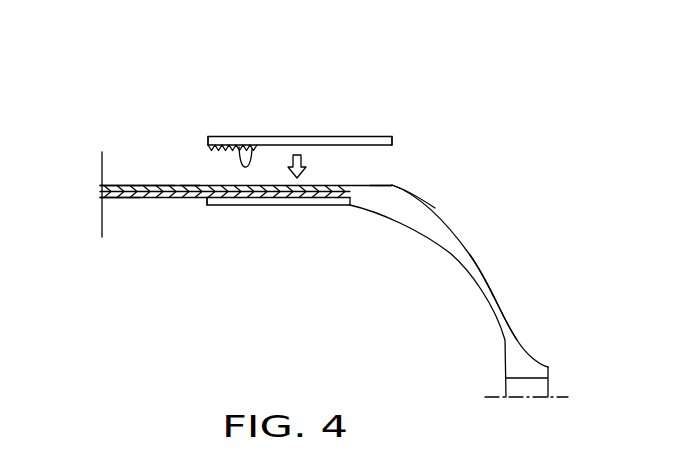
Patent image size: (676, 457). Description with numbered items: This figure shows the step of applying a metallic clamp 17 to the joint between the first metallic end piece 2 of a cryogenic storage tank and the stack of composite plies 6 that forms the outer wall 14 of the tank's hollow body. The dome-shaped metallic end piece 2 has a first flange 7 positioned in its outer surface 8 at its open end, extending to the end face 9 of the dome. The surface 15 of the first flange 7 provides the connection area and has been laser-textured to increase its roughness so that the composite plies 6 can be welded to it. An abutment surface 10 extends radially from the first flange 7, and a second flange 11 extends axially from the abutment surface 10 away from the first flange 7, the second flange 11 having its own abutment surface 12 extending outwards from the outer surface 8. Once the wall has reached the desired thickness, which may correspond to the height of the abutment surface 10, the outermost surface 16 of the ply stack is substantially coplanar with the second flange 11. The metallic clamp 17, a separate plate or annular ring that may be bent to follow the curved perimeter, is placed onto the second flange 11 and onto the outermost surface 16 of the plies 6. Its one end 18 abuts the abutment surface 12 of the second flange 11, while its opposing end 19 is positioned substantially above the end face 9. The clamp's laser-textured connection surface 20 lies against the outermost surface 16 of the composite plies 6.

The first metallic end piece 2 is at (445, 204).
The composite ply 6 is at (125, 184).
The first flange 7 is at (255, 206).
The outer surface 8 is at (477, 252).
The end face 9 is at (208, 198).
The abutment surface 10 is at (347, 198).
The second flange 11 is at (394, 180).
The abutment surface 12 is at (398, 181).
The outer wall 14 is at (150, 160).
The surface 15 is at (312, 198).
The outermost surface 16 is at (190, 182).
The metallic clamp 17 is at (312, 112).
The end 18 is at (392, 137).
The opposing end 19 is at (208, 135).
The connection surface 20 is at (236, 146).